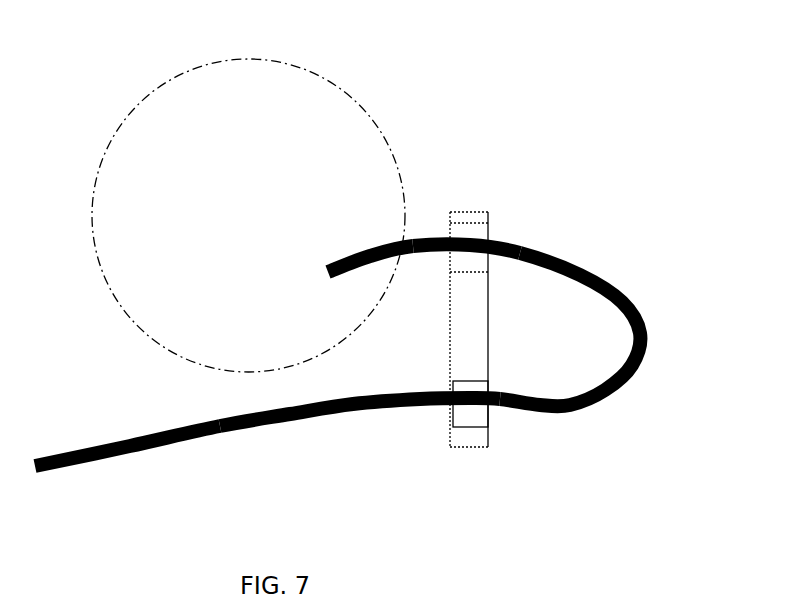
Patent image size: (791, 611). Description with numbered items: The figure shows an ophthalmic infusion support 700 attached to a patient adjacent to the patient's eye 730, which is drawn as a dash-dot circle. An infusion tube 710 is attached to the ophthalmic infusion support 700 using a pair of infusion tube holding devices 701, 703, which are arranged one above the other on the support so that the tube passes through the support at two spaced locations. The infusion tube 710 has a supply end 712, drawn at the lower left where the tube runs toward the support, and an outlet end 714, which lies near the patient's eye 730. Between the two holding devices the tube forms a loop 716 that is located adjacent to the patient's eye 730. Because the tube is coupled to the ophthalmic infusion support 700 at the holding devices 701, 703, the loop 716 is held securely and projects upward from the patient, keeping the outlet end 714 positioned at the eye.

The ophthalmic infusion support 700 is at (532, 284).
The infusion tube holding device 701 is at (483, 417).
The infusion tube holding device 703 is at (483, 235).
The infusion tube 710 is at (332, 420).
The supply end 712 is at (58, 468).
The outlet end 714 is at (338, 262).
The loop 716 is at (615, 282).
The patient's eye 730 is at (328, 113).